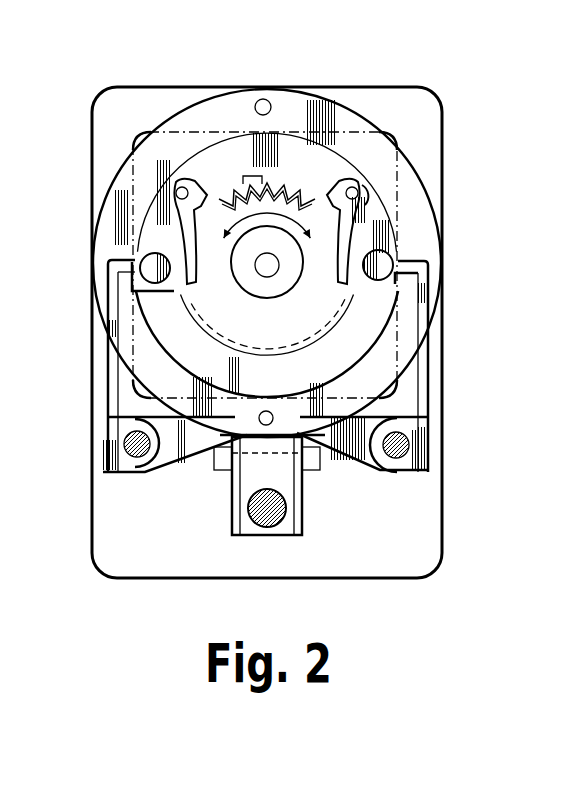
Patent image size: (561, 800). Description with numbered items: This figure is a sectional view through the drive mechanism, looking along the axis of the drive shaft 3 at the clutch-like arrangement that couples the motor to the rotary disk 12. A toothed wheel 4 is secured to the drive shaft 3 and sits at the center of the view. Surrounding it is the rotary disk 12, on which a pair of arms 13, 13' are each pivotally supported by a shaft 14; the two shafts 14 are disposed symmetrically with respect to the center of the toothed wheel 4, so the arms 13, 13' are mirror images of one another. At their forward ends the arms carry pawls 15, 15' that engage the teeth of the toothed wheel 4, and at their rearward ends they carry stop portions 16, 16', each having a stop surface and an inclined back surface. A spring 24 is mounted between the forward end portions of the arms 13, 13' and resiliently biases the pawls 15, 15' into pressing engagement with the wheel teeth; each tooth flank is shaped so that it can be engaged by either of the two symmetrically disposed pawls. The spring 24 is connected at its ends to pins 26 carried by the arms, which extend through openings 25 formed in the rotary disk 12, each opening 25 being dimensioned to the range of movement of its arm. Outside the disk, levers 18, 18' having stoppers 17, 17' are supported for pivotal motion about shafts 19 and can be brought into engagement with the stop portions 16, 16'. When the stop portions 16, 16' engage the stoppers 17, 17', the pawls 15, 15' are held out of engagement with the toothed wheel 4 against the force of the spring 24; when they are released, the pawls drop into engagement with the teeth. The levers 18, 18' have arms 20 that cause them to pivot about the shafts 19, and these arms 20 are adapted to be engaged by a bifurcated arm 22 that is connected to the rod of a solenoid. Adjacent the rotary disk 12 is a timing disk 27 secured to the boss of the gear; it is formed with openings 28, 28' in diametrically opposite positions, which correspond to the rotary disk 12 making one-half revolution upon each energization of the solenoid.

The drive shaft 3 is at (267, 277).
The toothed wheel 4 is at (313, 318).
The rotary disk 12 is at (213, 150).
The arm 13 is at (375, 299).
The arm 13' is at (155, 300).
The shaft 14 is at (153, 260).
The pawl 15 is at (303, 240).
The pawl 15' is at (231, 240).
The stop portion 16 is at (442, 294).
The stop portion 16' is at (109, 289).
The stopper 17 is at (443, 271).
The stopper 17' is at (90, 274).
The lever 18 is at (454, 372).
The lever 18' is at (81, 372).
The shaft 19 is at (126, 445).
The arm 20 is at (173, 453).
The bifurcated arm 22 is at (231, 530).
The spring 24 is at (283, 190).
The opening 25 is at (191, 181).
The pin 26 is at (390, 181).
The timing disk 27 is at (181, 118).
The opening 28 is at (257, 62).
The opening 28' is at (279, 390).